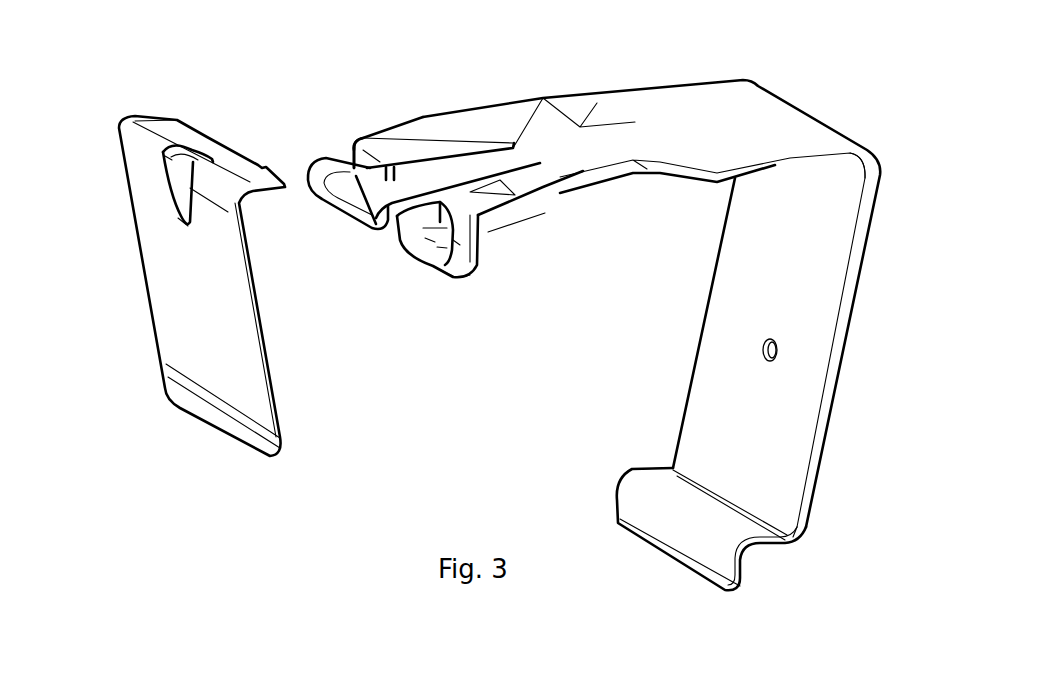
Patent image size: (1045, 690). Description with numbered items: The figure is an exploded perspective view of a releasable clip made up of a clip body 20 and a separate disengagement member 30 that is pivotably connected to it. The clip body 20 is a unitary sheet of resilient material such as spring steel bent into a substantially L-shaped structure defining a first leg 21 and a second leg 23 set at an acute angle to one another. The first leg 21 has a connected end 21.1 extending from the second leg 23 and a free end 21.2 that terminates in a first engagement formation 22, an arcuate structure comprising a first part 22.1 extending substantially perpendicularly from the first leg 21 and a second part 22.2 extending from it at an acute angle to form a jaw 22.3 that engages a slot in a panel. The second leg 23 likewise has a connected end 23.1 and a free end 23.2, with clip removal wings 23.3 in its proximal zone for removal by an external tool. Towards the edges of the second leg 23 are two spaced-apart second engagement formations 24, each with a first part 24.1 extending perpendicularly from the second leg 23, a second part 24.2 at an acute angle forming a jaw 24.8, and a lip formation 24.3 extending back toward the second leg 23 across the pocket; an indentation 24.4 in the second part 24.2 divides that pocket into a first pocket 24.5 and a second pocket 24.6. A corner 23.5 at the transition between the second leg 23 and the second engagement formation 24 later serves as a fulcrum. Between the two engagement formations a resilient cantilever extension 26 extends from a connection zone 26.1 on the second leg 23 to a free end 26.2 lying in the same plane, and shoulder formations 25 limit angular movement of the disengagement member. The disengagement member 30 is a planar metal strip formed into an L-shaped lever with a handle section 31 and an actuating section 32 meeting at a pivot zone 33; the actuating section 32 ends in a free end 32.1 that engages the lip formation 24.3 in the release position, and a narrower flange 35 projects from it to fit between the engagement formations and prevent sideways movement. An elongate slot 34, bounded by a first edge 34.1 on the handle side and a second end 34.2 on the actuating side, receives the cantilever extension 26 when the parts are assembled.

The clip body 20 is at (837, 97).
The first leg 21 is at (820, 243).
The connected end 21.1 is at (880, 180).
The free end 21.2 is at (803, 537).
The first engagement formation 22 is at (770, 567).
The first part 22.1 is at (780, 547).
The second part 22.2 is at (747, 577).
The jaw 22.3 is at (640, 482).
The second leg 23 is at (678, 113).
The connected end 23.1 is at (758, 107).
The free end 23.2 is at (357, 140).
The clip removal wings 23.3 is at (473, 123).
The corner 23.5 is at (485, 223).
The second engagement formation 24 is at (462, 292).
The first part 24.1 is at (483, 240).
The second part 24.2 is at (453, 278).
The lip formation 24.3 is at (420, 227).
The indentation 24.4 is at (430, 267).
The first pocket 24.5 is at (457, 257).
The second pocket 24.6 is at (430, 247).
The jaw 24.8 is at (470, 277).
The shoulder formation 25 is at (380, 147).
The cantilever extension 26 is at (460, 160).
The connection zone 26.1 is at (520, 130).
The free end 26.2 is at (373, 213).
The disengagement member 30 is at (118, 102).
The handle section 31 is at (187, 332).
The actuating section 32 is at (176, 125).
The free end 32.1 is at (200, 130).
The pivot zone 33 is at (153, 139).
The elongate slot 34 is at (183, 188).
The first edge 34.1 is at (180, 228).
The second end 34.2 is at (180, 158).
The flange 35 is at (240, 145).